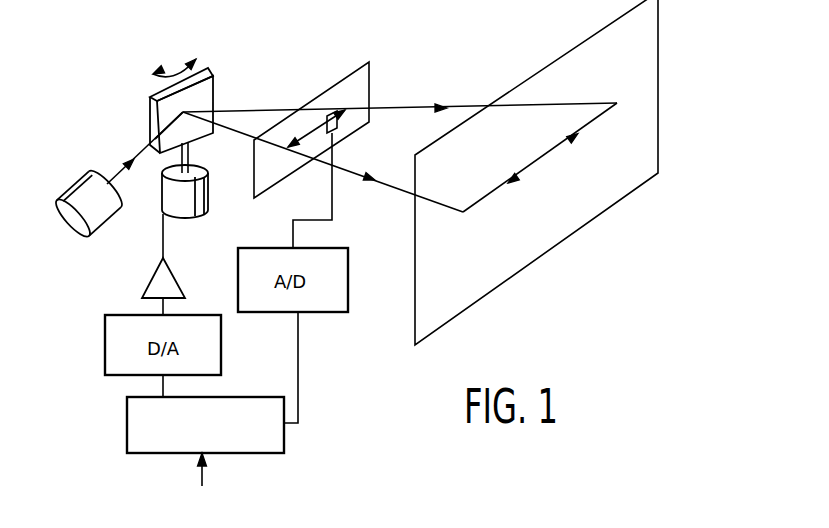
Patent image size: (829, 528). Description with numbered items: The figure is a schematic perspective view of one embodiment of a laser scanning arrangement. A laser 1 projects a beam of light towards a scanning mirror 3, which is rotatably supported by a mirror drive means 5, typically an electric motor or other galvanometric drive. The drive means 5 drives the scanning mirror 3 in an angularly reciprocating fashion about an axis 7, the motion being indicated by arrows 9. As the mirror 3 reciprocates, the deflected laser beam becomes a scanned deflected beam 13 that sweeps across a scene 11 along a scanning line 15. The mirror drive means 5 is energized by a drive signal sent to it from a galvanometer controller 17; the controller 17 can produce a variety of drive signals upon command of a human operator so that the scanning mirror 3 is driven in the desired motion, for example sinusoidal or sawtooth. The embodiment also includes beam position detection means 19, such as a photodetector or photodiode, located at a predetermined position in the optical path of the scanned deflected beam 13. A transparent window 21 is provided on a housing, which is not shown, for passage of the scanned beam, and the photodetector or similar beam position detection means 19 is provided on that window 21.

The laser 1 is at (85, 198).
The scanning mirror 3 is at (207, 75).
The mirror drive means 5 is at (165, 197).
The axis 7 is at (191, 154).
The arrows 9 is at (177, 72).
The scene 11 is at (637, 32).
The scanned deflected beam 13 is at (452, 107).
The scanning line 15 is at (597, 123).
The galvanometer controller 17 is at (285, 433).
The beam position detection means 19 is at (340, 125).
The transparent window 21 is at (360, 66).